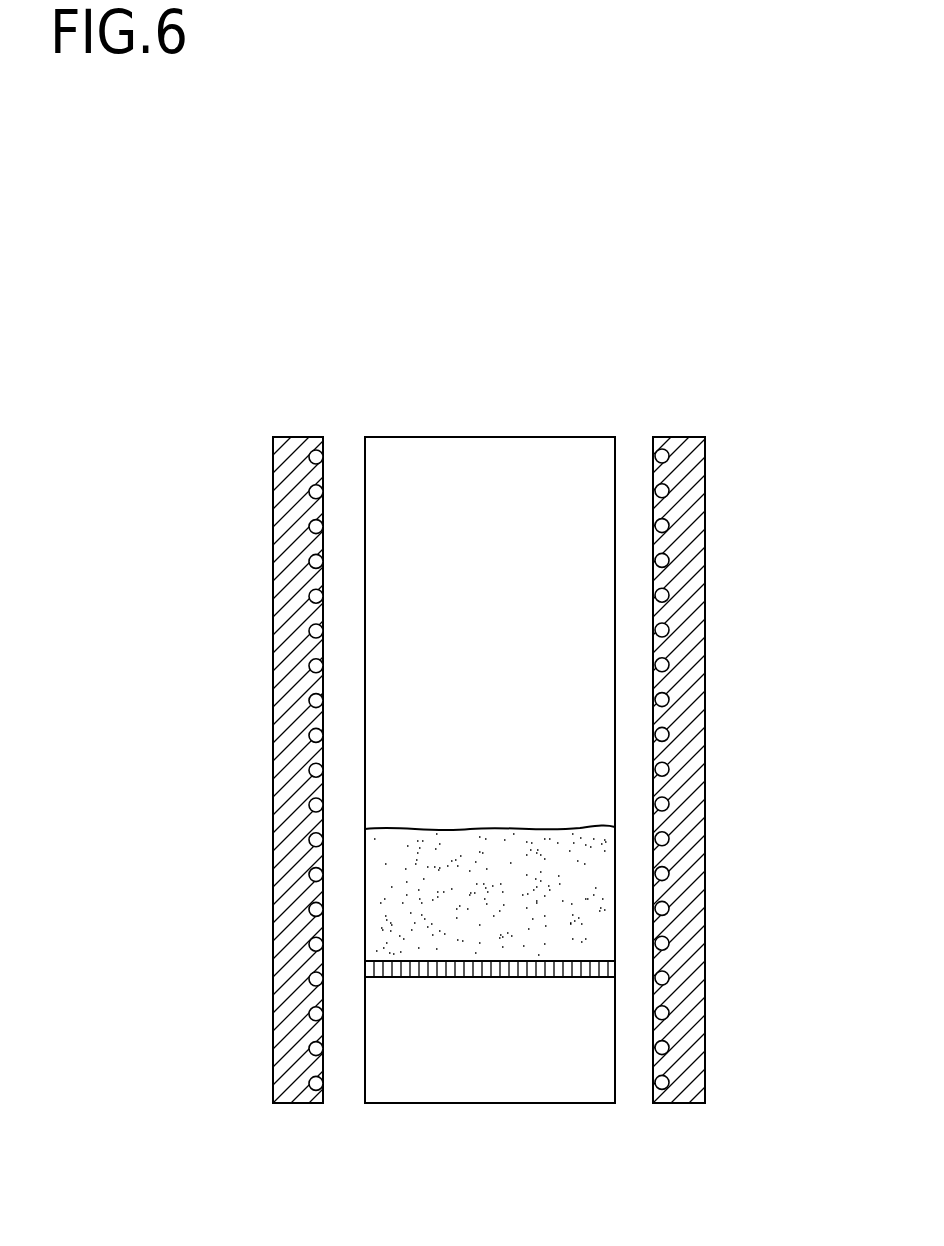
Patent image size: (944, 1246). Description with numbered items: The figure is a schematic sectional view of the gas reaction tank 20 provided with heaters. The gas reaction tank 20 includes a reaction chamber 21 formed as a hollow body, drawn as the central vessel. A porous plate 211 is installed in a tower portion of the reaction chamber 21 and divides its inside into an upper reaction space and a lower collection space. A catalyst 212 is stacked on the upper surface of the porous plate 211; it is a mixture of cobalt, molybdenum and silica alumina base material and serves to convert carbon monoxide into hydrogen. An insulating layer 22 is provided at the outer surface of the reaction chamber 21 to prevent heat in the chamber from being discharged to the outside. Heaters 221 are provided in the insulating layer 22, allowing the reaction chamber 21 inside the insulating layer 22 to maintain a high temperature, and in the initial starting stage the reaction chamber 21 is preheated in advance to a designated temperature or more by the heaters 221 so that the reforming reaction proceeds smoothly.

The gas reaction tank 20 is at (672, 315).
The reaction chamber 21 is at (620, 617).
The insulating layer 22 is at (712, 780).
The heaters 221 is at (324, 527).
The catalyst 212 is at (598, 893).
The porous plate 211 is at (587, 977).